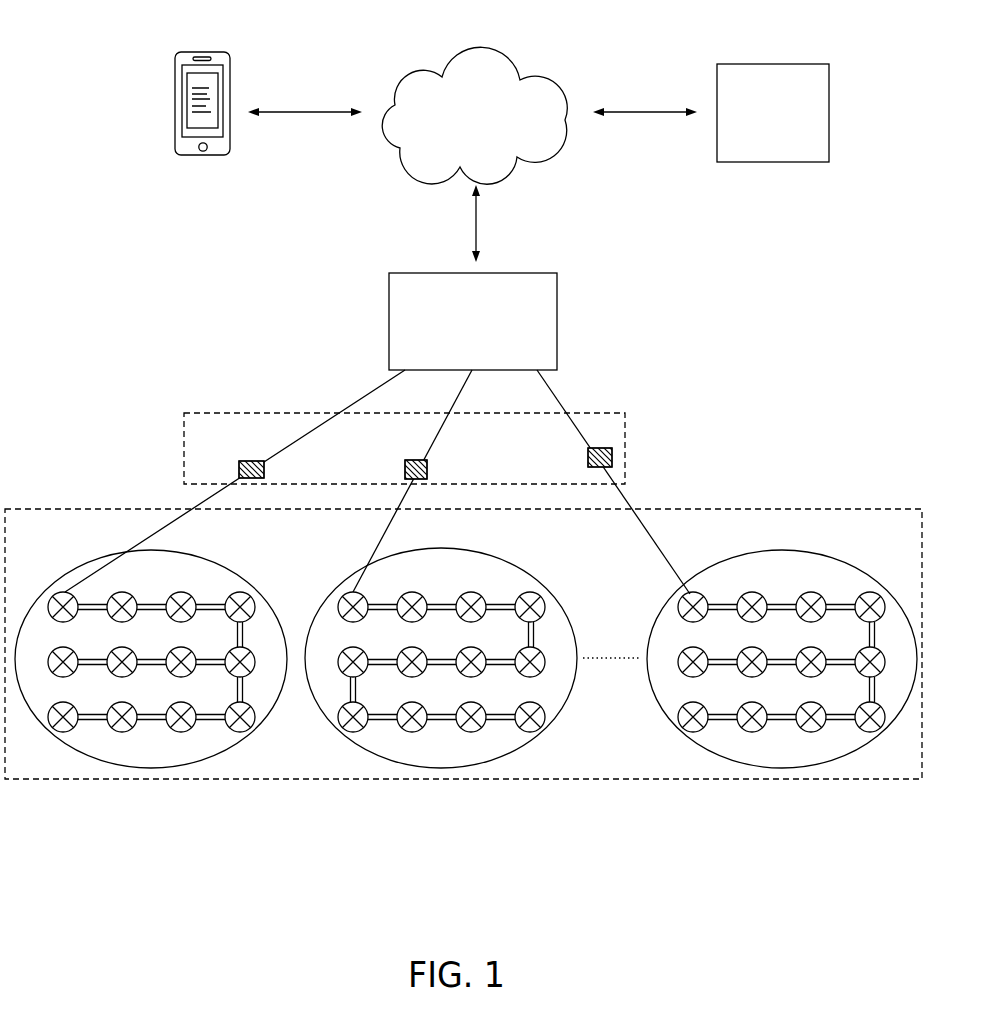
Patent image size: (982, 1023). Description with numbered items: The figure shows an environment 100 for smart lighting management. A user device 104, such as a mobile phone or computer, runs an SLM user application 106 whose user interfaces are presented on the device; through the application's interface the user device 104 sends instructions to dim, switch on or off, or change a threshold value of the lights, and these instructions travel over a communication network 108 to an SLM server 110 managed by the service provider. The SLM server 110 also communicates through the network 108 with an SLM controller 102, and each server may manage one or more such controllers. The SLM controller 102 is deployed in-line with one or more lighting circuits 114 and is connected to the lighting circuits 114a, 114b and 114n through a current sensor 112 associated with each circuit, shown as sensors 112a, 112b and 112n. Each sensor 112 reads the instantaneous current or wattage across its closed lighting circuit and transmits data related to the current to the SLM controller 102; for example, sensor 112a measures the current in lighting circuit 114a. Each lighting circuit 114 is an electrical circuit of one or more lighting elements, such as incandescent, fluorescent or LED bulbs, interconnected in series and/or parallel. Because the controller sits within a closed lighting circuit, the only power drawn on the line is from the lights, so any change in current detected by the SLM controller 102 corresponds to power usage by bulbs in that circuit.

The environment 100 is at (763, 888).
The smart lighting management (SLM) controller 102 is at (489, 356).
The user device 104 is at (192, 52).
The user application 106 is at (218, 88).
The communication network 108 is at (494, 140).
The SLM server 110 is at (789, 150).
The current sensor 112 is at (228, 413).
The current sensor 112a is at (240, 462).
The current sensor 112b is at (405, 462).
The current sensor 112n is at (588, 456).
The lighting circuit 114 is at (77, 509).
The lighting circuit 114a is at (93, 563).
The lighting circuit 114b is at (357, 572).
The lighting circuit 114n is at (675, 592).